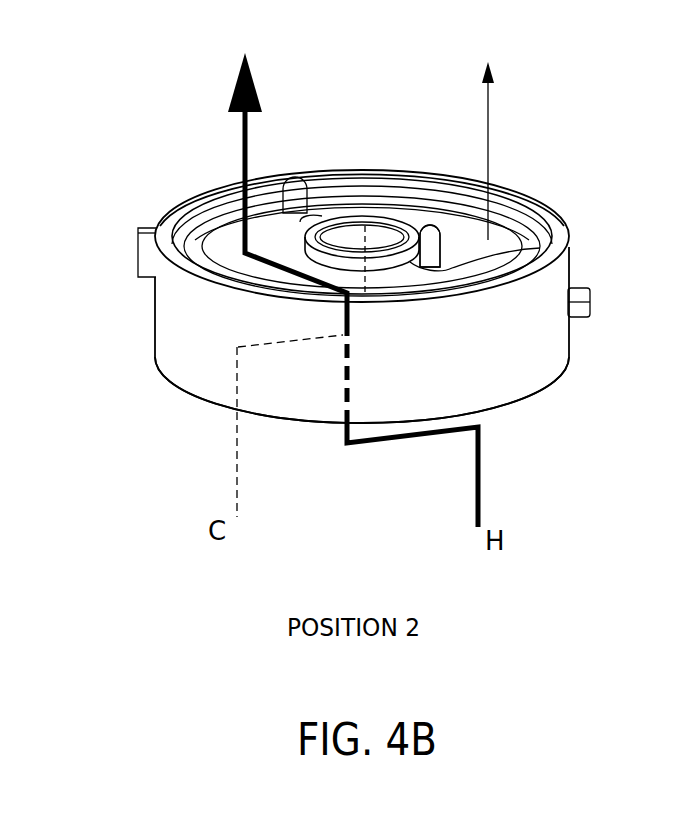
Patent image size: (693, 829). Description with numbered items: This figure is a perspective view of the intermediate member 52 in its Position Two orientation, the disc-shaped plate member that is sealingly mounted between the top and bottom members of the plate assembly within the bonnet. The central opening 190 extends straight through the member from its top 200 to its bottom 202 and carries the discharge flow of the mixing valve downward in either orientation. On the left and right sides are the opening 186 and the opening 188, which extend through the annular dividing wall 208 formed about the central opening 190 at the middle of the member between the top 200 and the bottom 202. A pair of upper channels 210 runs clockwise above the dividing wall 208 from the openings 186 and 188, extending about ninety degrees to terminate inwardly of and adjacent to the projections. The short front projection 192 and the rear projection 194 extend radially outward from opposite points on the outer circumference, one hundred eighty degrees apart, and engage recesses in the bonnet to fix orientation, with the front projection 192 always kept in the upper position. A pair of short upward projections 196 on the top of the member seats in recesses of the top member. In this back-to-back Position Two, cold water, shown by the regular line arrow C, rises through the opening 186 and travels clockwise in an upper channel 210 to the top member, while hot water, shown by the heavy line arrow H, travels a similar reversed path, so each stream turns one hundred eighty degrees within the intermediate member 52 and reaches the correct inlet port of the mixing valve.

The intermediate member 52 is at (142, 326).
The opening 186 is at (370, 295).
The opening 188 is at (357, 233).
The central opening 190 is at (360, 225).
The front projection 192 is at (143, 262).
The rear projection 194 is at (590, 310).
The upward projections 196 is at (295, 187).
The top 200 is at (190, 195).
The bottom 202 is at (213, 398).
The annular dividing wall 208 is at (232, 258).
The upper channels 210 is at (428, 235).